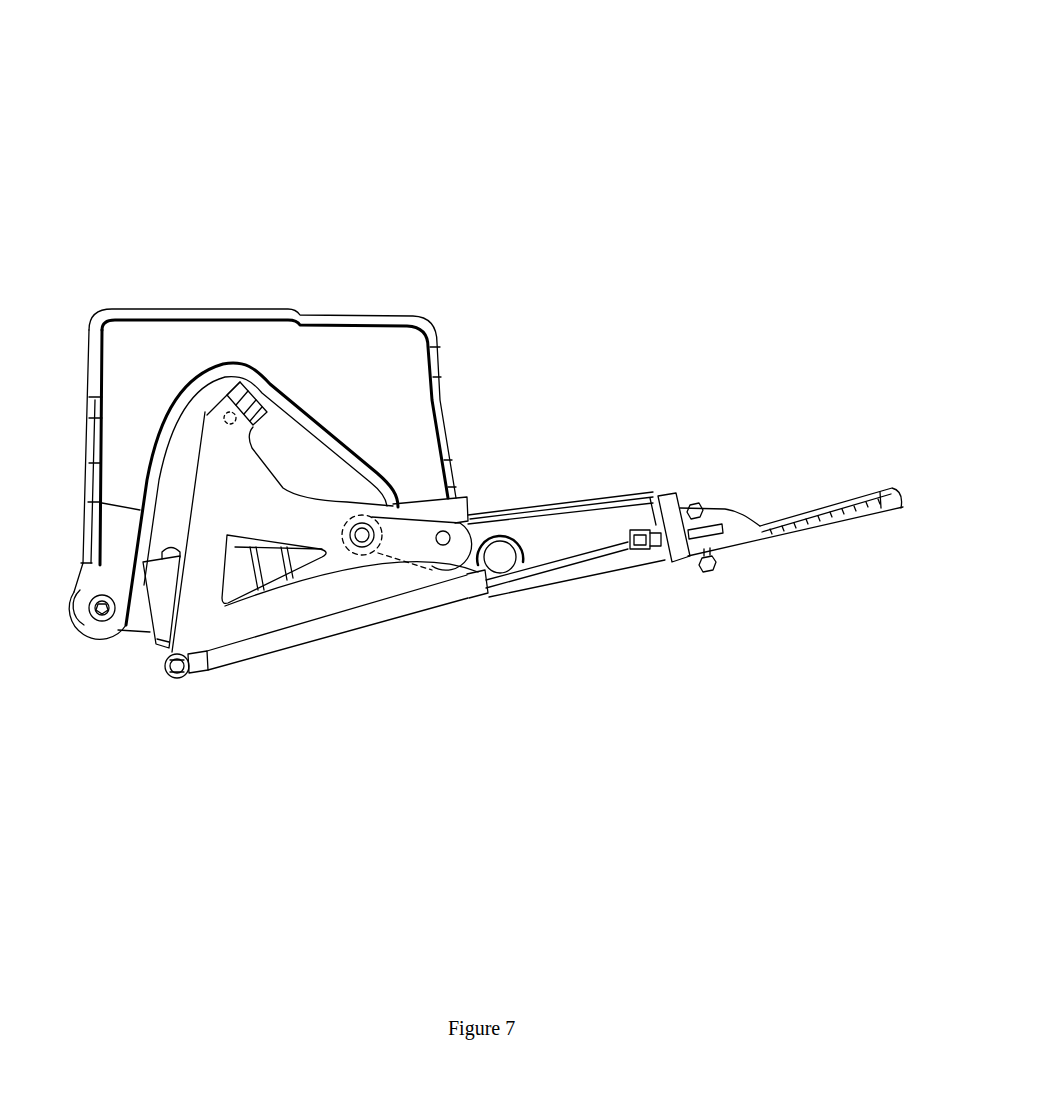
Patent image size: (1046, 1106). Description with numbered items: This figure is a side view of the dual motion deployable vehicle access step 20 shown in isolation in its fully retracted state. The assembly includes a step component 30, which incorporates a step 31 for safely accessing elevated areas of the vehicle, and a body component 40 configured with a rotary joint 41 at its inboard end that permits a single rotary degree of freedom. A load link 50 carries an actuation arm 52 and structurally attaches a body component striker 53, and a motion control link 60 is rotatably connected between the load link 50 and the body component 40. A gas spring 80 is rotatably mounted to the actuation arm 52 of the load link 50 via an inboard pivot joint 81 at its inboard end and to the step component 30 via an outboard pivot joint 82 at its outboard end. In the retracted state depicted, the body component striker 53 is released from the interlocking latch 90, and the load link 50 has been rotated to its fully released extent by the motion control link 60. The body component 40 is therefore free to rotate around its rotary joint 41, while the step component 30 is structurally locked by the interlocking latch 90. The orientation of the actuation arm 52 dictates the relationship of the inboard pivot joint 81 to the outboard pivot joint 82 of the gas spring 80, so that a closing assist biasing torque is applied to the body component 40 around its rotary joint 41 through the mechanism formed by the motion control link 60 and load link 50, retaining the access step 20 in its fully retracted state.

The dual motion deployable vehicle access step 20 is at (462, 198).
The step component 30 is at (670, 567).
The step 31 is at (818, 522).
The body component 40 is at (573, 570).
The rotary joint 41 is at (97, 623).
The load link 50 is at (349, 500).
The actuation arm 52 is at (193, 620).
The body component striker 53 is at (233, 412).
The motion control link 60 is at (477, 552).
The gas spring 80 is at (375, 624).
The inboard pivot joint 81 is at (170, 678).
The outboard pivot joint 82 is at (670, 497).
The interlocking latch 90 is at (174, 528).